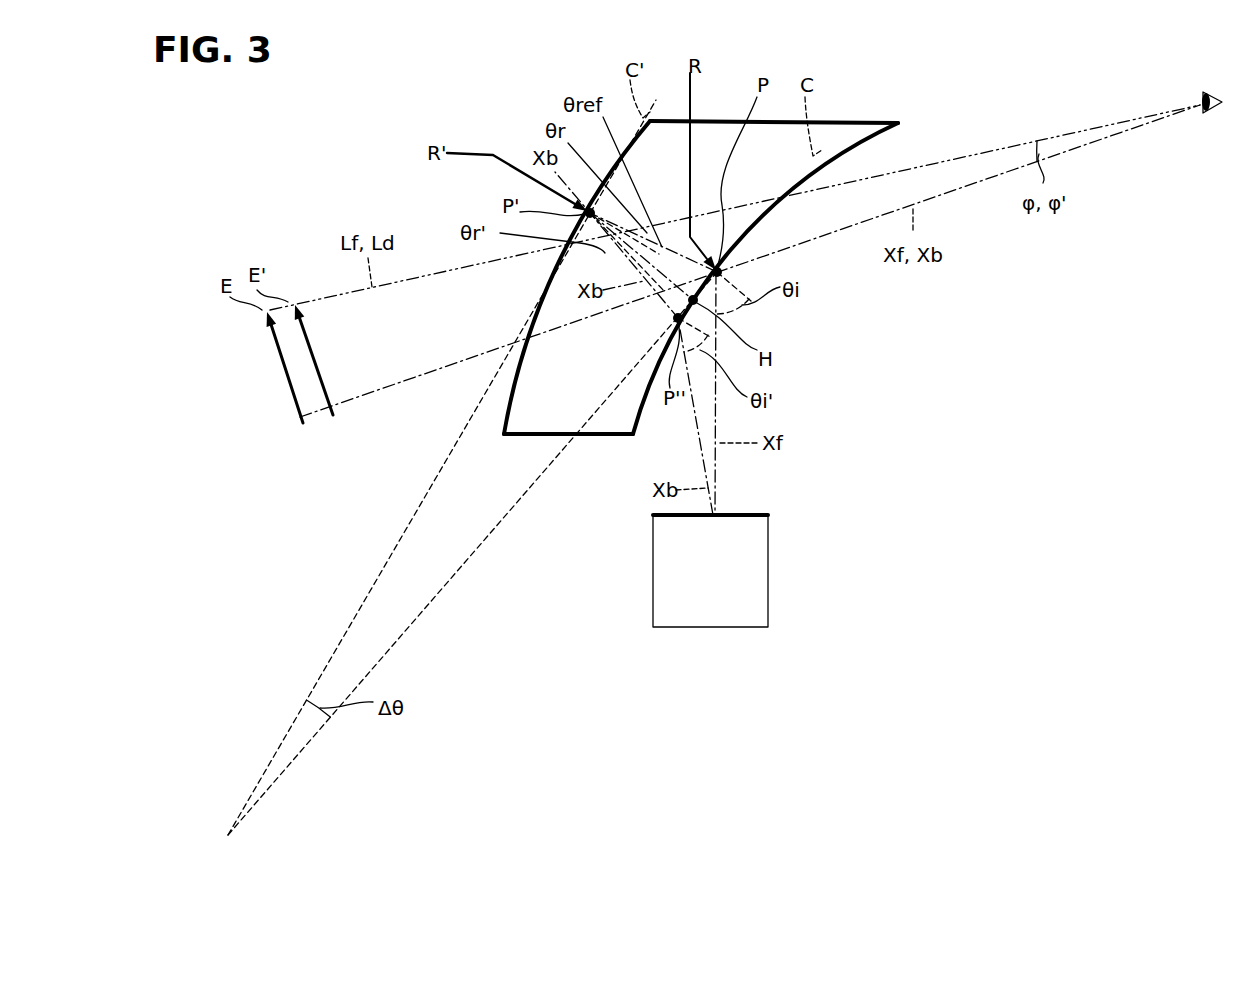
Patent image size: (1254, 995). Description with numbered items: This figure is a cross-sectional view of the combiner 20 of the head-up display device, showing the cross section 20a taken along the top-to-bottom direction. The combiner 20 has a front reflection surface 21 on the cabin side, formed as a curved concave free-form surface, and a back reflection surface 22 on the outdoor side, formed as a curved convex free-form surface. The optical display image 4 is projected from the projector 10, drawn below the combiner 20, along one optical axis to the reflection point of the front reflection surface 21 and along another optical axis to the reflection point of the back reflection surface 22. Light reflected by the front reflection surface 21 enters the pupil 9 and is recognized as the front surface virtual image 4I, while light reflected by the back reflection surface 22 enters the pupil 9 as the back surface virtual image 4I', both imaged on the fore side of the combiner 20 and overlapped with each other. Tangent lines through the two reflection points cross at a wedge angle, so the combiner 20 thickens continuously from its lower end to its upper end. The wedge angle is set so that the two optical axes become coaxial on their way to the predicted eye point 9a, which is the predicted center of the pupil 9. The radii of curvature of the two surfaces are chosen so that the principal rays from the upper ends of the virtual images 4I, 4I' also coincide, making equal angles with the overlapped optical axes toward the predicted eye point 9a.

The combiner 20 is at (682, 263).
The cross section of the combiner 20a is at (710, 137).
The front reflection surface 21 is at (641, 412).
The back reflection surface 22 is at (507, 410).
The optical display image 4 is at (745, 513).
The projector 10 is at (781, 604).
The pupil 9 is at (1207, 116).
The predicted eye point 9a is at (1200, 93).
The front surface virtual image 4I is at (283, 392).
The back surface virtual image 4I' is at (345, 372).